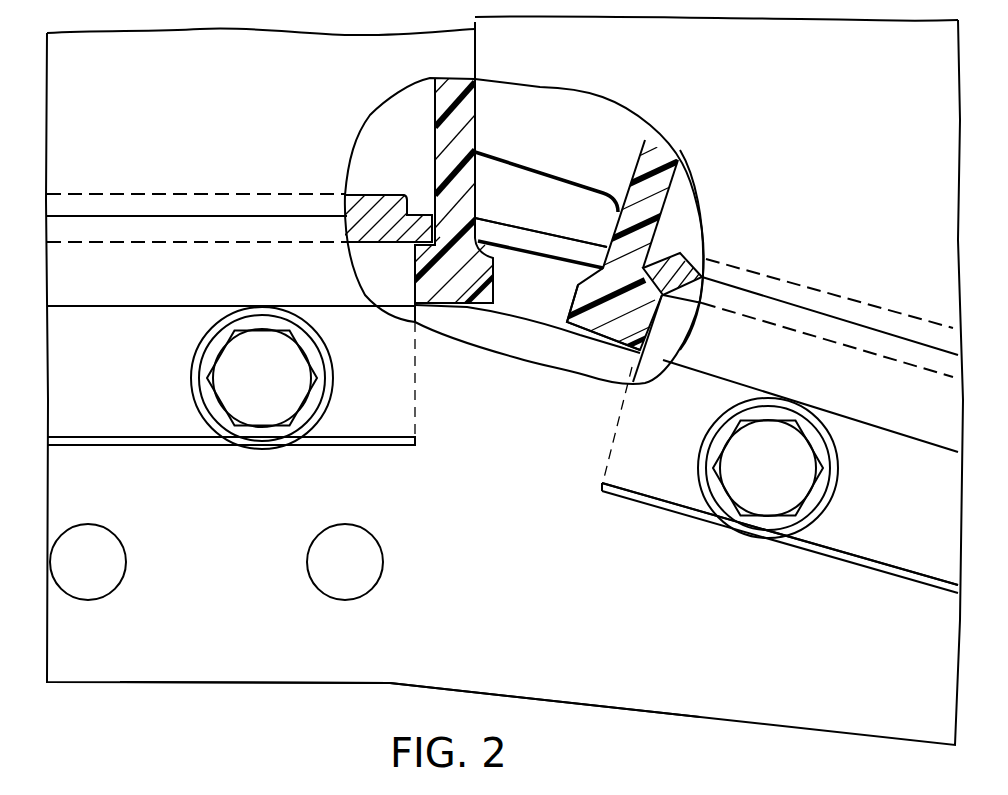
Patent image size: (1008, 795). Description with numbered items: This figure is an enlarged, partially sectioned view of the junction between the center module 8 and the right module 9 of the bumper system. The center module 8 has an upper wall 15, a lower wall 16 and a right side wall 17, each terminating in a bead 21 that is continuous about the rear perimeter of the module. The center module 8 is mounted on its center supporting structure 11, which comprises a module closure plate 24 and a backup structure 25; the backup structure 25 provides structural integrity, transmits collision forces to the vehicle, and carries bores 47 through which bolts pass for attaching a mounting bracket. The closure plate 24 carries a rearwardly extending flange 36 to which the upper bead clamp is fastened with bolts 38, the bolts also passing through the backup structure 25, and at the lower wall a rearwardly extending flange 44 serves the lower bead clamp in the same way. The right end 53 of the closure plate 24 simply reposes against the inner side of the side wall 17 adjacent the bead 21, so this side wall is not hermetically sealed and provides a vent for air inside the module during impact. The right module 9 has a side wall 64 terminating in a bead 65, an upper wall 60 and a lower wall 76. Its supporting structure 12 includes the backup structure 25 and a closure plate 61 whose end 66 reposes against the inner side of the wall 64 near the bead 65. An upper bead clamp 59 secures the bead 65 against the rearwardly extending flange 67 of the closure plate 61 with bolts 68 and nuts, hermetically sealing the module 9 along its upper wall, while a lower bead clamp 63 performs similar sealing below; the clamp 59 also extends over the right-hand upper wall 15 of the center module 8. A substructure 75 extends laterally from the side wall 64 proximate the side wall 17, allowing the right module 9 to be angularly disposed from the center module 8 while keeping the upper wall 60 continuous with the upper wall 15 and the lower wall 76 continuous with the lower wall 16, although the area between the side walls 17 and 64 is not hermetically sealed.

The center module 8 is at (254, 139).
The right module 9 is at (817, 139).
The center supporting structure 11 is at (122, 683).
The supporting structure 12 is at (650, 710).
The upper wall 15 is at (303, 40).
The lower wall 16 is at (372, 150).
The right side wall 17 is at (442, 133).
The bead 21 is at (477, 212).
The module closure plate 24 is at (152, 207).
The backup structure 25 is at (240, 675).
The rearwardly extending flange 36 is at (303, 447).
The bolt 38 is at (227, 362).
The rearwardly extending flange 44 is at (408, 298).
The bores 47 is at (118, 576).
The right end 53 is at (432, 238).
The upper bead clamp 59 is at (97, 430).
The upper wall 60 is at (497, 33).
The closure plate 61 is at (878, 312).
The lower bead clamp 63 is at (522, 308).
The side wall 64 is at (648, 228).
The bead 65 is at (637, 328).
The end 66 is at (688, 262).
The rearwardly extending flange 67 is at (688, 508).
The bolts 68 is at (807, 480).
The substructure 75 is at (575, 139).
The lower wall 76 is at (690, 233).